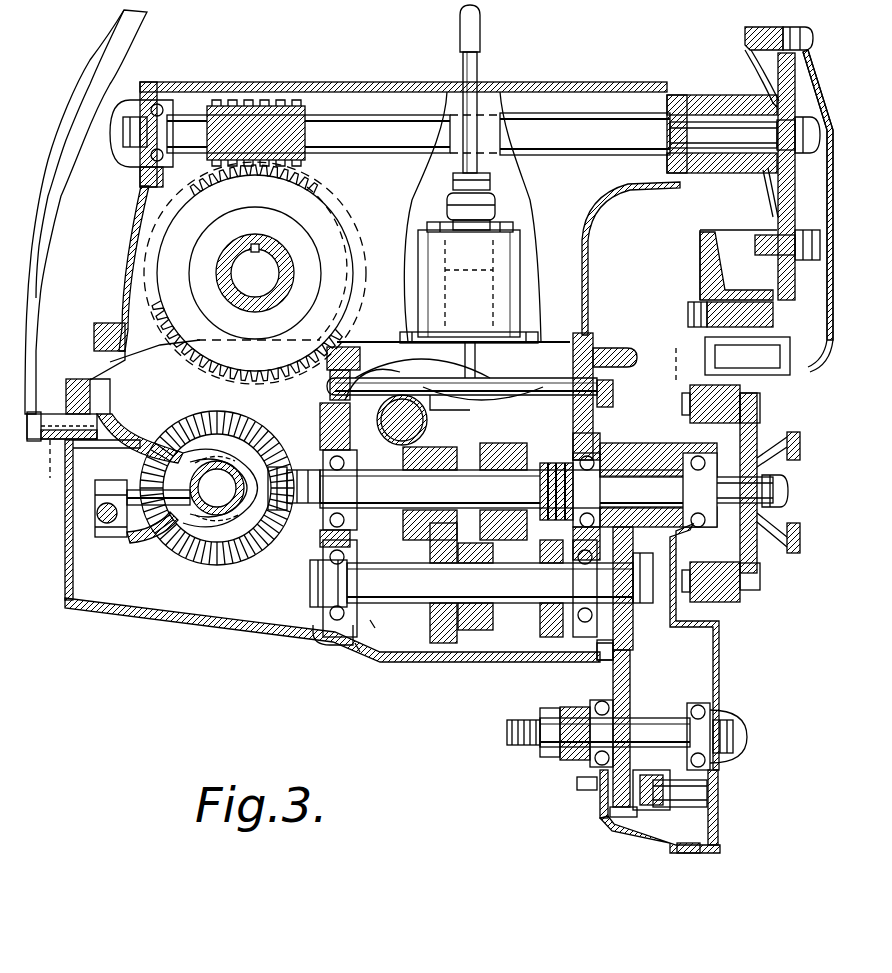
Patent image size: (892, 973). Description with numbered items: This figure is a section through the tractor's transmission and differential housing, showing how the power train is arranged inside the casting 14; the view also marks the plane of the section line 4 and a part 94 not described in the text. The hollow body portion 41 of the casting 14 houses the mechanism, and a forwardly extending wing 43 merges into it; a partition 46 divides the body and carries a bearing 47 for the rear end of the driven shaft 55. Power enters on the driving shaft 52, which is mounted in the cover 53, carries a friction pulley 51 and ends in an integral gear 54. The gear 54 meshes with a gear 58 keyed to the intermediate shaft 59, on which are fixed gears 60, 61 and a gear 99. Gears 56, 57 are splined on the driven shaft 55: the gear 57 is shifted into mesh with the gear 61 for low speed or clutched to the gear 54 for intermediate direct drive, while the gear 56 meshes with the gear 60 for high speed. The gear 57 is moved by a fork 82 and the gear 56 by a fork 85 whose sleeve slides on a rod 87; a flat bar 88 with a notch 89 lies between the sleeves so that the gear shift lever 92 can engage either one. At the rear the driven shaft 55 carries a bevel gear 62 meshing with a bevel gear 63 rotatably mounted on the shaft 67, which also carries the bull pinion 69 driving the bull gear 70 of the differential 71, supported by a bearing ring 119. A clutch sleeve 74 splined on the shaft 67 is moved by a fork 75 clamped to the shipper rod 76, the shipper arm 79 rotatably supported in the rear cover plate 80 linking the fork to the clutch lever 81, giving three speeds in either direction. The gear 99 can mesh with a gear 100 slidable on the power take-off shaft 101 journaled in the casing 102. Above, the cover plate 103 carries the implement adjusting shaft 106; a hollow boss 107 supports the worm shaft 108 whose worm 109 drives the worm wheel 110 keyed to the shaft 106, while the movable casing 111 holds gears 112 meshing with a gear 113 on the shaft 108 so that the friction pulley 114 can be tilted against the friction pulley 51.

The section line 4 is at (357, 413).
The casting 14 is at (235, 627).
The hollow body portion 41 is at (375, 628).
The wing 43 is at (315, 640).
The partition 46 is at (330, 402).
The bearing 47 is at (318, 550).
The friction pulley 51 is at (735, 603).
The driving shaft 52 is at (617, 488).
The cover 53 is at (634, 446).
The gear 54 is at (548, 450).
The driven shaft 55 is at (472, 400).
The gear 56 is at (424, 436).
The gear 57 is at (358, 601).
The gear 58 is at (552, 640).
The intermediate shaft 59 is at (522, 605).
The gear 60 is at (432, 627).
The gear 61 is at (480, 630).
The bevel gear 62 is at (290, 508).
The bevel gear 63 is at (217, 562).
The shaft 67 is at (193, 505).
The bull pinion 69 is at (153, 405).
The bull gear 70 is at (359, 238).
The differential 71 is at (350, 286).
The clutch sleeve 74 is at (187, 505).
The fork 75 is at (116, 462).
The shipper rod 76 is at (110, 539).
The shipper arm 79 is at (104, 412).
The rear cover plate 80 is at (73, 352).
The clutch lever 81 is at (50, 277).
The fork 82 is at (583, 325).
The fork 85 is at (442, 530).
The rod 87 is at (584, 372).
The flat bar 88 is at (600, 357).
The notch 89 is at (520, 300).
The gear shift lever 92 is at (481, 66).
The shifter finger 94 is at (410, 395).
The gear 99 is at (634, 632).
The gear 100 is at (633, 683).
The power take-off shaft 101 is at (670, 722).
The casing 102 is at (653, 840).
The cover plate 103 is at (127, 257).
The adjusting shaft 106 is at (284, 248).
The hollow boss 107 is at (595, 84).
The worm shaft 108 is at (358, 115).
The worm 109 is at (274, 99).
The worm wheel 110 is at (299, 178).
The movable casing 111 is at (751, 63).
The gears 112 is at (727, 281).
The gear 113 is at (776, 178).
The friction pulley 114 is at (702, 243).
The bearing ring 119 is at (240, 416).